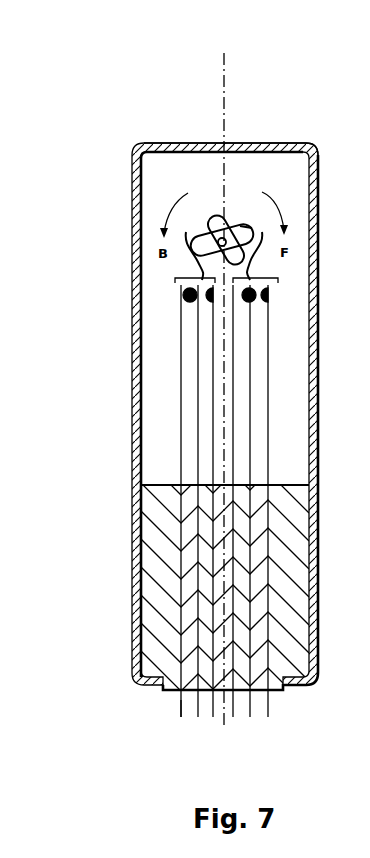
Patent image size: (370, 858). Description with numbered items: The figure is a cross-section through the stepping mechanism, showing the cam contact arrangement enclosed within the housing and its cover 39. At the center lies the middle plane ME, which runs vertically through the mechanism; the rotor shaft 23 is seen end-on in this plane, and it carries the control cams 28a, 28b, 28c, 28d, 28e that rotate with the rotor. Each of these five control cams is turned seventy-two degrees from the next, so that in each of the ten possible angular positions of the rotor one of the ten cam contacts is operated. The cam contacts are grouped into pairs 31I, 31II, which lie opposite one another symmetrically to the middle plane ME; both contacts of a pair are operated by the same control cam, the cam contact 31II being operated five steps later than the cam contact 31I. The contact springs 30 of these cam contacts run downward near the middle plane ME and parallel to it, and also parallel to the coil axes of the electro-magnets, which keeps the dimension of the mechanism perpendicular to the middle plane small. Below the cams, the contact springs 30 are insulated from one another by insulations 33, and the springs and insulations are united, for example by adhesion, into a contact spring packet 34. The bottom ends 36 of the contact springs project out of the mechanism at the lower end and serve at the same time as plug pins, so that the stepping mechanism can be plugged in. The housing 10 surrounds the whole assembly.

The middle plane ME is at (224, 58).
The housing 10 is at (132, 558).
The rotor shaft 23 is at (226, 238).
The control cam 28a is at (203, 233).
The control cam 28b is at (216, 218).
The control cam 28c is at (252, 228).
The control cam 28d is at (256, 252).
The control cam 28e is at (203, 265).
The contact springs 30 is at (197, 455).
The cam contact 31I is at (185, 273).
The cam contact 31II is at (258, 273).
The insulations 33 is at (188, 528).
The contact spring packet 34 is at (108, 430).
The bottom ends of the contact springs 36 is at (181, 713).
The cover 39 is at (178, 143).